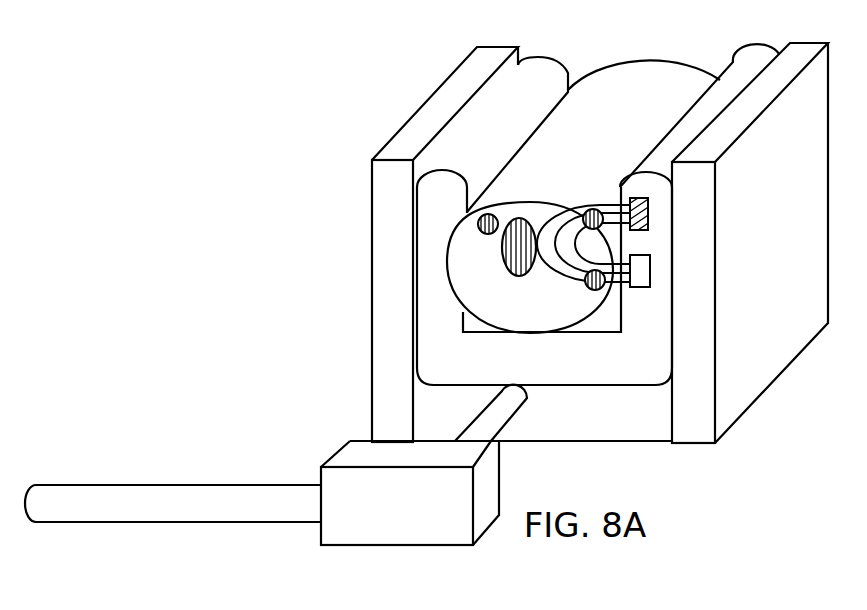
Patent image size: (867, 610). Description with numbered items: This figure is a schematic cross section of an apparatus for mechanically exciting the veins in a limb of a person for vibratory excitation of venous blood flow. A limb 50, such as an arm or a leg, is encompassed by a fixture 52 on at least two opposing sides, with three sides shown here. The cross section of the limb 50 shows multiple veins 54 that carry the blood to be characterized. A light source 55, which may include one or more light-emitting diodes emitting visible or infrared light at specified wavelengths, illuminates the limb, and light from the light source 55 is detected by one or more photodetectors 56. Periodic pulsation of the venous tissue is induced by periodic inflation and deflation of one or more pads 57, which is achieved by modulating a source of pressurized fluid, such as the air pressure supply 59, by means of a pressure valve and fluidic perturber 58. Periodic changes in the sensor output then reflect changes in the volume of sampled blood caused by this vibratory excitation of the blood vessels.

The limb 50 is at (609, 62).
The fixture 52 is at (372, 283).
The veins 54 is at (492, 214).
The light source 55 is at (648, 212).
The photodetectors 56 is at (650, 287).
The pads 57 is at (538, 56).
The pressure valve and fluidic perturber 58 is at (378, 546).
The air pressure supply 59 is at (117, 484).